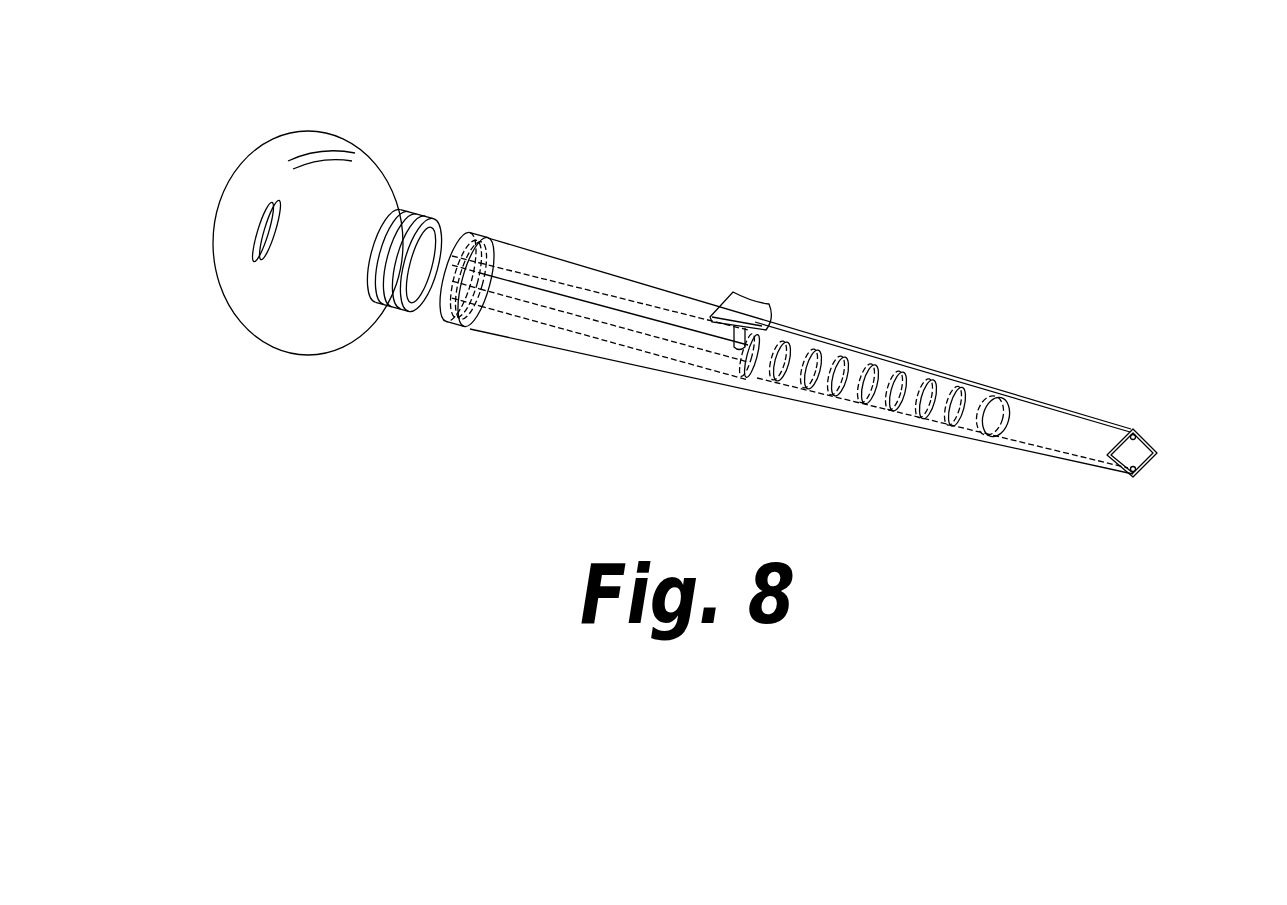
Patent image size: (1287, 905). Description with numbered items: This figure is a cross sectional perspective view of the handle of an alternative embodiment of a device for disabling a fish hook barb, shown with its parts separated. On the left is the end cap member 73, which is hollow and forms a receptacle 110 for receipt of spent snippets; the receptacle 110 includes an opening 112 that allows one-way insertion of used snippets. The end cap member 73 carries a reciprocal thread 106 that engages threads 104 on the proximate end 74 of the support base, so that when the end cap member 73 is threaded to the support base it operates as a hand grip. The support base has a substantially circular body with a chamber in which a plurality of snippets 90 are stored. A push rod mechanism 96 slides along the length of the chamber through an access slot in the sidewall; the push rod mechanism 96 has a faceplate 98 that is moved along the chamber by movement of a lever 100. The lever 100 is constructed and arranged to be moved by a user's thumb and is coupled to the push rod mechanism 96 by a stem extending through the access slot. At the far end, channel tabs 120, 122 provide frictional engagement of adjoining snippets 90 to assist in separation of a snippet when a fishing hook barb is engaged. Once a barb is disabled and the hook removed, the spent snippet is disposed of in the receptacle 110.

The end cap member 73 is at (336, 134).
The opening 112 is at (255, 255).
The reciprocal thread 106 is at (415, 213).
The receptacle 110 is at (410, 282).
The threads 104 is at (463, 233).
The proximate end 74 is at (483, 318).
The push rod mechanism 96 is at (653, 330).
The lever 100 is at (740, 315).
The faceplate 98 is at (767, 335).
The snippets 90 is at (893, 373).
The channel tab 120 is at (1133, 477).
The channel tab 122 is at (1135, 431).